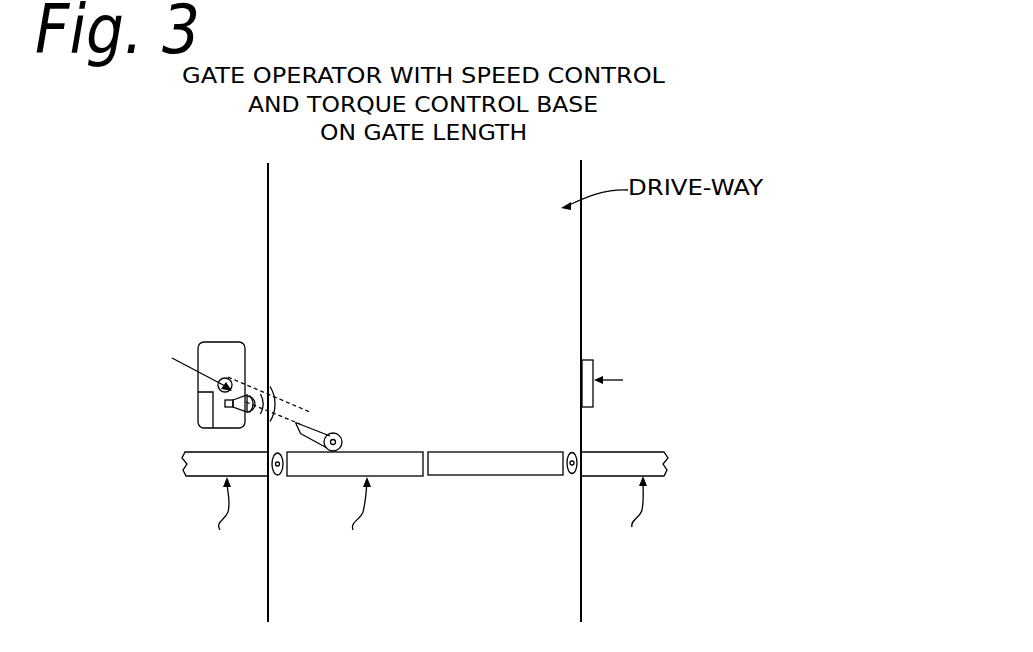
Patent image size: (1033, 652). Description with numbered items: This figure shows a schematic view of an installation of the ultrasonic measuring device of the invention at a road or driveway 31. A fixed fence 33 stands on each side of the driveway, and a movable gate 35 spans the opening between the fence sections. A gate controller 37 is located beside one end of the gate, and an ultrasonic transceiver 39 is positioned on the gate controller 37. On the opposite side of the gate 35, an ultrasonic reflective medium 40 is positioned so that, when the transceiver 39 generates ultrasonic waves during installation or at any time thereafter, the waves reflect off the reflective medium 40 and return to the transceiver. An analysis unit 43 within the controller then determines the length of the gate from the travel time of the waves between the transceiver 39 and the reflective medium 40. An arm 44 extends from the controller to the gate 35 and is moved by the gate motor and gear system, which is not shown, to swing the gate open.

The road or driveway 31 is at (442, 218).
The fixed fence 33 is at (197, 468).
The movable gate 35 is at (478, 451).
The gate controller 37 is at (227, 342).
The ultrasonic transceiver 39 is at (245, 380).
The ultrasonic reflective medium 40 is at (595, 358).
The analysis unit 43 is at (203, 408).
The arm 44 is at (300, 432).